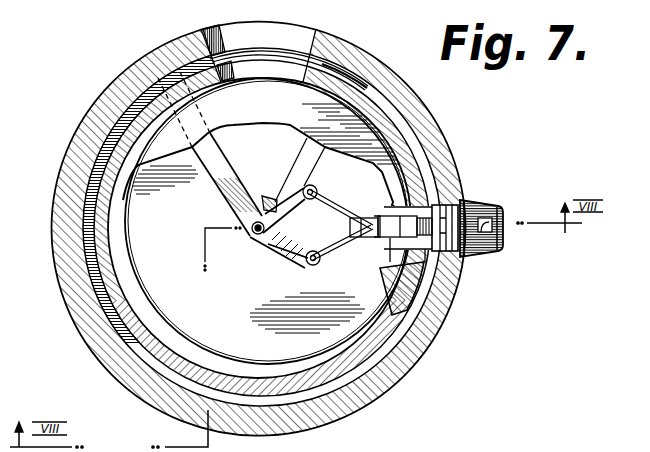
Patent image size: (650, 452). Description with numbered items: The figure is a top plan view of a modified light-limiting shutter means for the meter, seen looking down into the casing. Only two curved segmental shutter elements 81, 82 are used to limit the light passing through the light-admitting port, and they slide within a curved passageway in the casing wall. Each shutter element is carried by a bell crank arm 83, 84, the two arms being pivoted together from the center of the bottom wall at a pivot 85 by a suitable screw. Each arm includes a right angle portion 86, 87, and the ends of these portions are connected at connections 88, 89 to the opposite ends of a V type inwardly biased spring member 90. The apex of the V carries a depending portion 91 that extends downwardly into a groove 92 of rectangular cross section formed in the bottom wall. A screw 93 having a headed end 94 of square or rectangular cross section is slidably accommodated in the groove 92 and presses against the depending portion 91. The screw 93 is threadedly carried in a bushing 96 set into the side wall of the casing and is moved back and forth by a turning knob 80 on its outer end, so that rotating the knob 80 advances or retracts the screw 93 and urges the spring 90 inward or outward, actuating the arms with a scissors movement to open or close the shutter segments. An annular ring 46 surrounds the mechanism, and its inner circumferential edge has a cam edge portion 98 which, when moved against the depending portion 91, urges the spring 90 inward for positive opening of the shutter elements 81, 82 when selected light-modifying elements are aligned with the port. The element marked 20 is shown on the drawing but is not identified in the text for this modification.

The toggle rod 20 is at (349, 192).
The annular ring 46 is at (279, 364).
The turning knob 80 is at (495, 229).
The curved segmental shutter element 81 is at (330, 62).
The curved segmental shutter element 82 is at (184, 44).
The bell crank arm 83 is at (303, 145).
The bell crank arm 84 is at (207, 165).
The pivot 85 is at (255, 236).
The right angle portion 86 is at (277, 200).
The right angle portion 87 is at (278, 260).
The connection 88 is at (318, 189).
The connection 89 is at (316, 266).
The V type inwardly biased spring member 90 is at (338, 199).
The depending portion 91 is at (375, 239).
The groove 92 is at (352, 226).
The screw 93 is at (428, 212).
The headed end 94 is at (403, 238).
The bushing 96 is at (466, 232).
The cam edge portion 98 is at (249, 124).